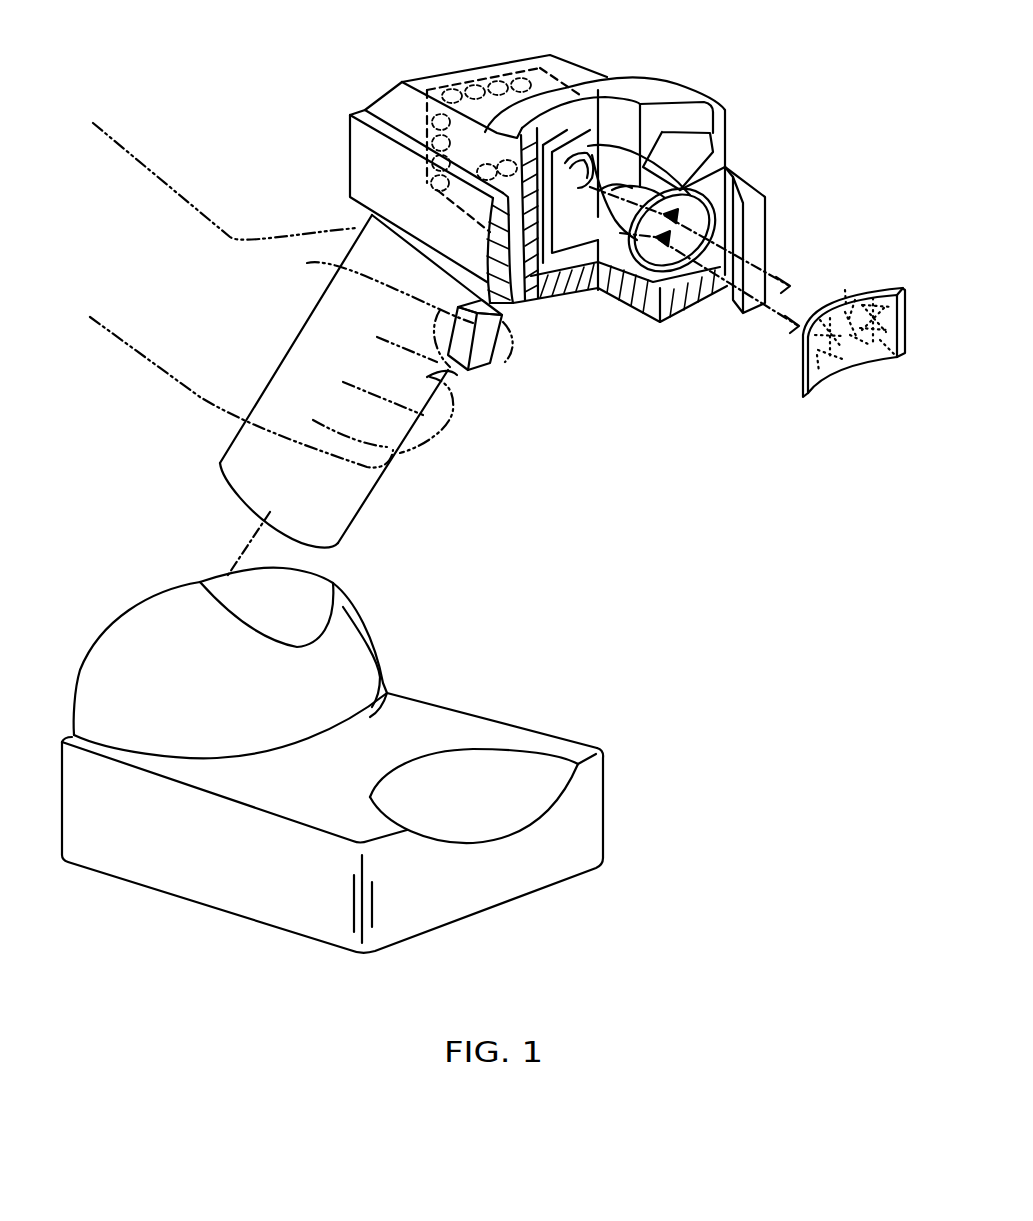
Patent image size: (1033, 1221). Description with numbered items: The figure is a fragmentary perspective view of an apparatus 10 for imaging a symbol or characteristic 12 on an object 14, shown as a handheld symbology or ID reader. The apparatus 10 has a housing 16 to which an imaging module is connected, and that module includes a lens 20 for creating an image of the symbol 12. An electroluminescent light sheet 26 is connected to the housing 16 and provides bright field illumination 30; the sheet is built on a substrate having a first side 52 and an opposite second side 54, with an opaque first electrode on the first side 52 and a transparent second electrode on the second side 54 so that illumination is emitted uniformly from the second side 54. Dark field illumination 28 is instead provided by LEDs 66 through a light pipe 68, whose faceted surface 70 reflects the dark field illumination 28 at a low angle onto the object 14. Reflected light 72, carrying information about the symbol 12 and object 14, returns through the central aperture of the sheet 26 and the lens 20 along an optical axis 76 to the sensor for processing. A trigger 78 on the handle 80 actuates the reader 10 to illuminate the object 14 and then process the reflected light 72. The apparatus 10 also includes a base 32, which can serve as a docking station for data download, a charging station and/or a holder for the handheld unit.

The apparatus 10 is at (697, 63).
The symbol or characteristic 12 is at (847, 343).
The object 14 is at (873, 290).
The housing 16 is at (363, 172).
The lens 20 is at (563, 198).
The electroluminescent light sheet 26 is at (642, 187).
The dark field illumination 28 is at (800, 282).
The bright field illumination 30 is at (742, 300).
The base 32 is at (195, 872).
The first side 52 is at (620, 182).
The second side 54 is at (650, 257).
The LEDs 66 is at (470, 75).
The light pipe 68 is at (678, 147).
The faceted surface 70 is at (726, 166).
The reflected light 72 is at (787, 295).
The optical axis 76 is at (571, 152).
The trigger 78 is at (490, 343).
The handle 80 is at (337, 493).